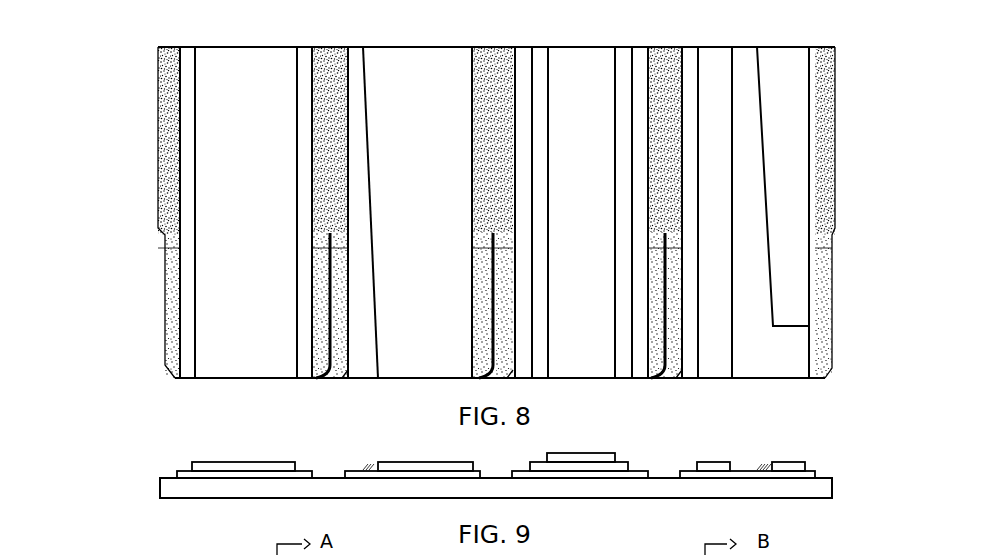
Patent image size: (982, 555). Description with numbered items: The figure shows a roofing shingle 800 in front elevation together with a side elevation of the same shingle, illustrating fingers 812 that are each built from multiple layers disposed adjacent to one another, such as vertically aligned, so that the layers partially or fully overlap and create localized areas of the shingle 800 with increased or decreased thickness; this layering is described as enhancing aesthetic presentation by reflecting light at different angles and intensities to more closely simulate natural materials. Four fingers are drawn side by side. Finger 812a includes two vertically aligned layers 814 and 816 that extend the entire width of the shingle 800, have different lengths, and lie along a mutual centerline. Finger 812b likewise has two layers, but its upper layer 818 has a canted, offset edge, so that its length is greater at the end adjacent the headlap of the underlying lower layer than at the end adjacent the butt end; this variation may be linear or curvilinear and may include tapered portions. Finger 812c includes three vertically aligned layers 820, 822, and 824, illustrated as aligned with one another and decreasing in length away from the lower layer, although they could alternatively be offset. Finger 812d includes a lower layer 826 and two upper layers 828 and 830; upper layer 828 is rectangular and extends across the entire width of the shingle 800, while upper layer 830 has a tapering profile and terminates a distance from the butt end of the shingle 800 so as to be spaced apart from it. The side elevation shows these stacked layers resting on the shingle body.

In FIG. 8, the shingle 800 is at (118, 82).
In FIG. 8, the fingers 812 is at (400, 379).
In FIG. 8, the finger 812a is at (313, 41).
In FIG. 8, the finger 812b is at (480, 41).
In FIG. 8, the finger 812c is at (650, 41).
In FIG. 8, the finger 812d is at (815, 41).
In FIG. 8, the layer 814 is at (188, 121).
In FIG. 9, the layer 814 is at (178, 476).
In FIG. 8, the layer 816 is at (222, 178).
In FIG. 9, the layer 816 is at (210, 462).
In FIG. 8, the upper layer 818 is at (435, 140).
In FIG. 9, the upper layer 818 is at (428, 461).
In FIG. 8, the layer 820 is at (640, 378).
In FIG. 9, the layer 820 is at (640, 470).
In FIG. 8, the layer 822 is at (618, 378).
In FIG. 9, the layer 822 is at (622, 462).
In FIG. 8, the layer 824 is at (602, 190).
In FIG. 8, the lower layer 826 is at (780, 365).
In FIG. 9, the lower layer 826 is at (747, 470).
In FIG. 8, the upper layer 828 is at (722, 357).
In FIG. 9, the upper layer 828 is at (715, 462).
In FIG. 8, the upper layer 830 is at (797, 282).
In FIG. 9, the upper layer 830 is at (803, 462).